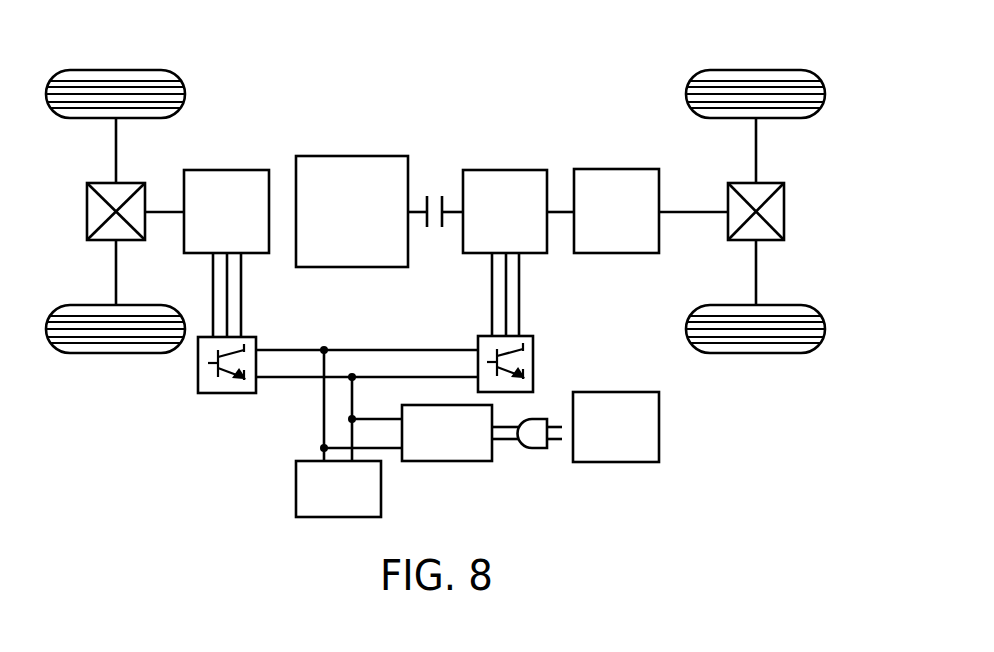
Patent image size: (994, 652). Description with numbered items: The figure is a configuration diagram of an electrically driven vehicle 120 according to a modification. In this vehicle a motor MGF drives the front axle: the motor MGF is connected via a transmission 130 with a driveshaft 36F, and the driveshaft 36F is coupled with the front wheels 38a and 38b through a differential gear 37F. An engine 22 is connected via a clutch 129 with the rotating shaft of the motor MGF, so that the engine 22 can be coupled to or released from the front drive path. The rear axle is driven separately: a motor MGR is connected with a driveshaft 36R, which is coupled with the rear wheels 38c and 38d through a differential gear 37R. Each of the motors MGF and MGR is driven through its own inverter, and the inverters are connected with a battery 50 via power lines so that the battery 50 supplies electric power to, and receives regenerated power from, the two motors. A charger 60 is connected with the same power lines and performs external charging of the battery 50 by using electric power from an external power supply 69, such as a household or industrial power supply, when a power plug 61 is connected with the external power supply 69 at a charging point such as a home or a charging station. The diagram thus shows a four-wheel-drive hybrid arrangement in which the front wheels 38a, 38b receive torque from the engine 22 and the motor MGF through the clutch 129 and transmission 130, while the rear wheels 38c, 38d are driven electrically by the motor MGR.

The electrically driven vehicle 120 is at (623, 57).
The front wheel 38a is at (755, 70).
The front wheel 38b is at (757, 355).
The rear wheel 38c is at (115, 70).
The rear wheel 38d is at (113, 353).
The differential gear 37R is at (102, 183).
The differential gear 37F is at (773, 183).
The driveshaft 36R is at (163, 208).
The driveshaft 36F is at (687, 208).
The motor MGR is at (227, 168).
The motor MGF is at (505, 168).
The engine 22 is at (352, 155).
The clutch 129 is at (436, 195).
The transmission 130 is at (616, 167).
The battery 50 is at (296, 489).
The charger 60 is at (447, 463).
The power plug 61 is at (532, 450).
The external power supply 69 is at (617, 463).